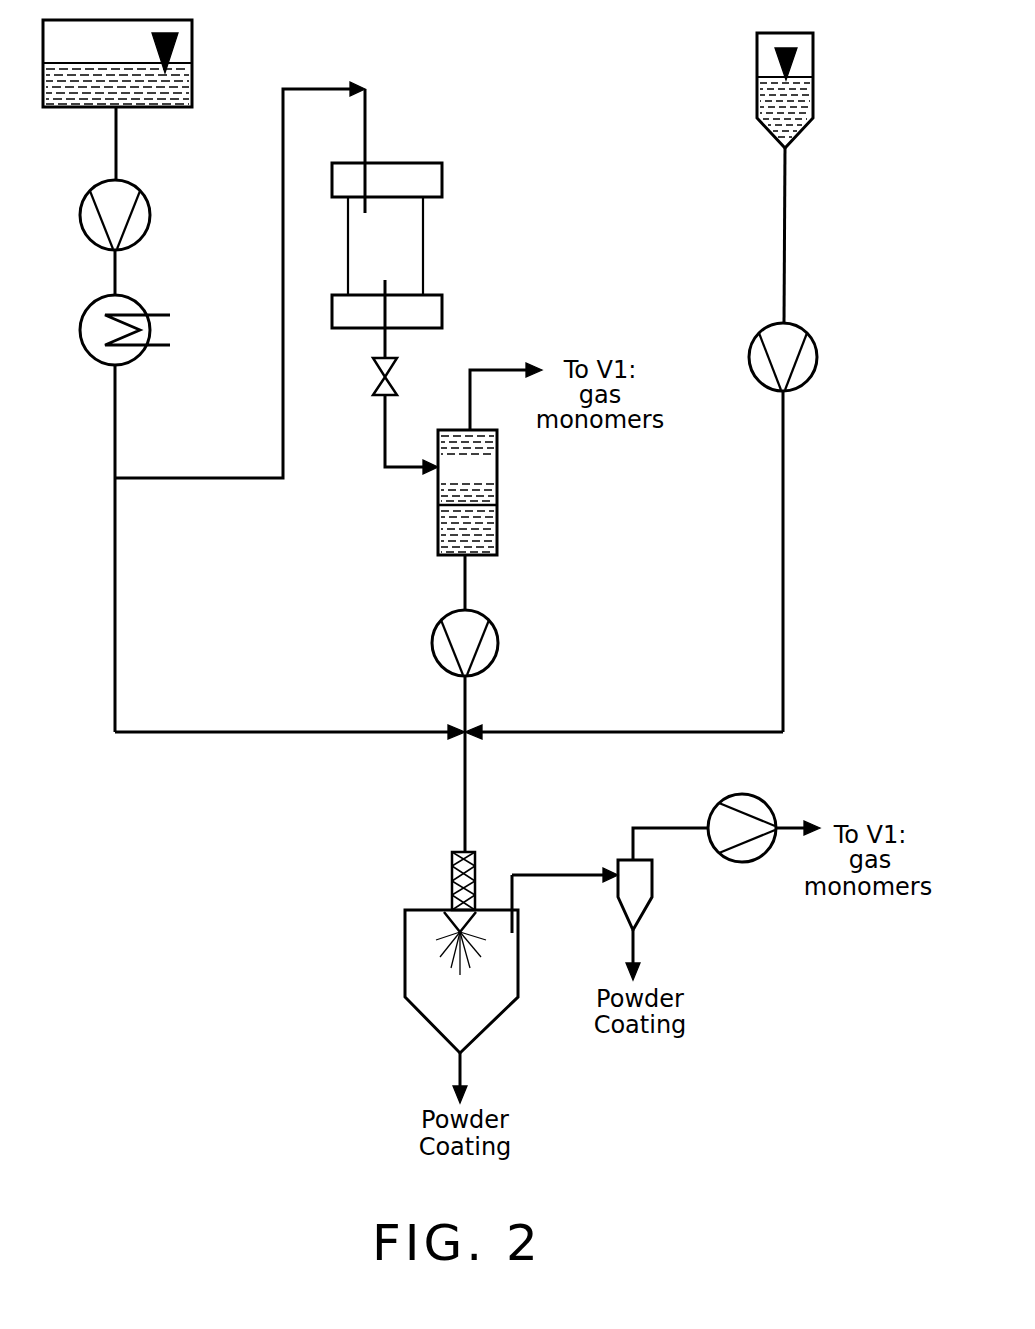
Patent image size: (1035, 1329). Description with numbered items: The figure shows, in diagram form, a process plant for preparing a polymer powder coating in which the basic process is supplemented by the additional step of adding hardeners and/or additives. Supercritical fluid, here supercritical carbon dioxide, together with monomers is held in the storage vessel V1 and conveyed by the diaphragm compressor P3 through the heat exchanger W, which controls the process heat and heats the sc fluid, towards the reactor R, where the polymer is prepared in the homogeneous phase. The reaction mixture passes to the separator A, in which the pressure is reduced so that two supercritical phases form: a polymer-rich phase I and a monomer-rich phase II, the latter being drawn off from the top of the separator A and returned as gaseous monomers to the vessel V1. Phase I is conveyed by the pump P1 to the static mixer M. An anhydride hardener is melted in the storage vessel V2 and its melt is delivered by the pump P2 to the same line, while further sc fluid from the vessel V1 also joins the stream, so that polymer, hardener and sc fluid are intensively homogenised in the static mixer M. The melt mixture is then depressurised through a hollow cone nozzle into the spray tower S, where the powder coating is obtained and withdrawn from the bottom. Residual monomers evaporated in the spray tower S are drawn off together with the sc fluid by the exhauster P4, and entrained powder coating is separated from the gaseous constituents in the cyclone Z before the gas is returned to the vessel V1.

The storage vessel V1 is at (117, 63).
The storage vessel for hardener V2 is at (785, 76).
The pump P1 is at (486, 643).
The pump P2 is at (803, 357).
The diaphragm compressor P3 is at (132, 215).
The exhauster P4 is at (742, 845).
The heat exchanger W is at (140, 330).
The reactor R is at (387, 260).
The separator A is at (467, 492).
The static mixer M is at (448, 881).
The spray tower S is at (461, 964).
The cyclone Z is at (635, 895).